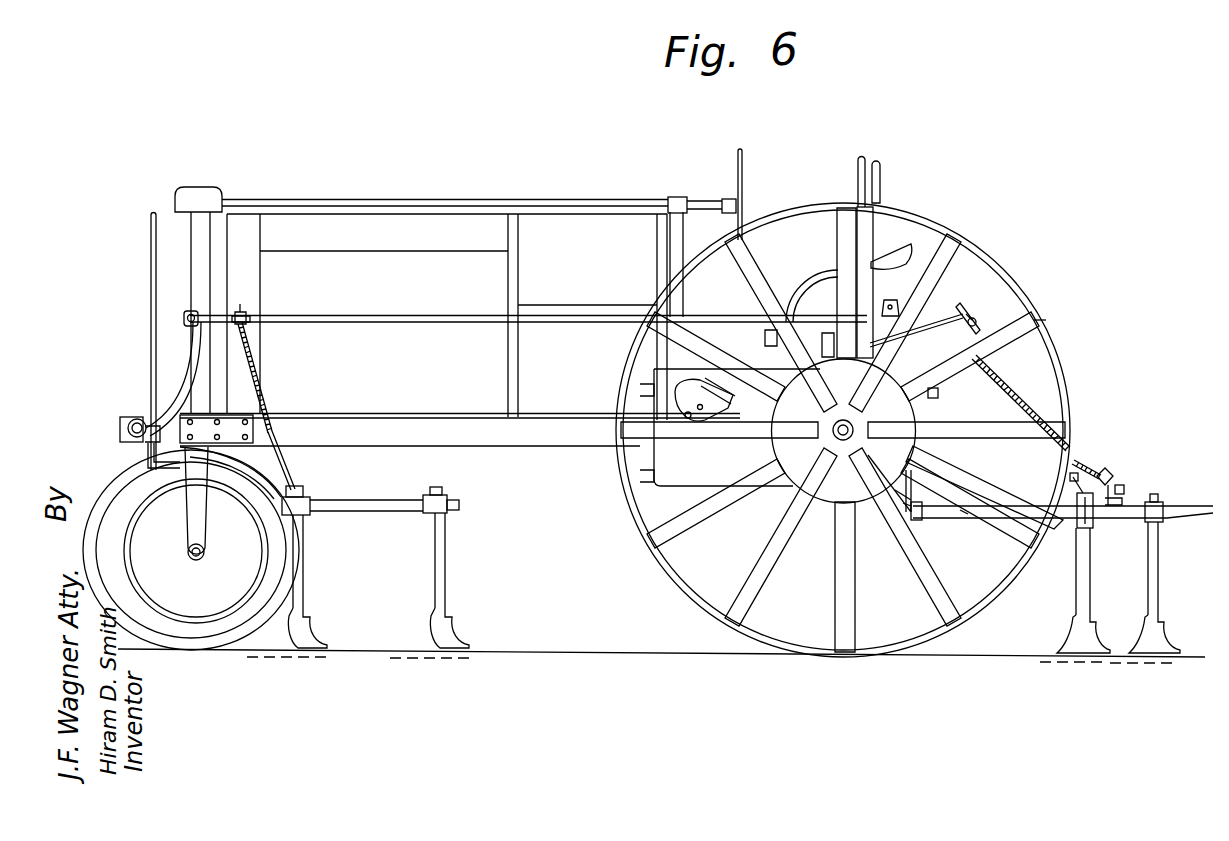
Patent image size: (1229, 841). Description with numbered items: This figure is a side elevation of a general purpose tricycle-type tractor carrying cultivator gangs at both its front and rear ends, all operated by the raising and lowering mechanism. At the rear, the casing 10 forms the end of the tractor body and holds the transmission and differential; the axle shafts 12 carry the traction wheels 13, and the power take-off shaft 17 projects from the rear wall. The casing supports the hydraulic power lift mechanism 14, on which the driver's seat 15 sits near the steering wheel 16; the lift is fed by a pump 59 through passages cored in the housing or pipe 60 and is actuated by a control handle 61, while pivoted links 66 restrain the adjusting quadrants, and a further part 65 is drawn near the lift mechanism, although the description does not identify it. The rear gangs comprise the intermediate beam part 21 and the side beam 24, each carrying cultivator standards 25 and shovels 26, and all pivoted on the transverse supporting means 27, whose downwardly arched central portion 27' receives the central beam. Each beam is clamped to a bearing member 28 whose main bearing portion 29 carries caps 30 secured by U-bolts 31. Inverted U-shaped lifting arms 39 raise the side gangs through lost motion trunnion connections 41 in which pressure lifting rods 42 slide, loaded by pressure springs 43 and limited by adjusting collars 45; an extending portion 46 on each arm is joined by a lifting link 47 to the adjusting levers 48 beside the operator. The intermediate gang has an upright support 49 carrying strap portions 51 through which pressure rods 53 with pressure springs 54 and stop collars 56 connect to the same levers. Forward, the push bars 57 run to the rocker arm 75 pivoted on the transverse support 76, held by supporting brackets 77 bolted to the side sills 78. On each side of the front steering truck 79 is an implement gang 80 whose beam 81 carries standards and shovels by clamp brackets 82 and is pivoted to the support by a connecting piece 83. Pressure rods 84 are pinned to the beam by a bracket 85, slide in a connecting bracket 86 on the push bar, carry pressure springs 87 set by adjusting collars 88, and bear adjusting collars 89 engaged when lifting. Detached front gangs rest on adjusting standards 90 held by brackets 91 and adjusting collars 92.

The casing 10 is at (660, 398).
The axle shafts 12 is at (837, 437).
The traction wheels 13 is at (655, 545).
The power lift mechanism 14 is at (790, 308).
The driver's seat 15 is at (902, 250).
The steering wheel 16 is at (737, 153).
The power take-off shaft 17 is at (984, 487).
The intermediate gang beam part 21 is at (965, 516).
The side gang beam 24 is at (1172, 516).
The cultivator standards 25 is at (304, 562).
The cultivator shovels 26 is at (442, 642).
The transverse supporting means 27 is at (895, 470).
The downwardly arched central portion 27' is at (884, 530).
The bearing members 28 is at (908, 522).
The main bearing portion 29 is at (925, 535).
The caps 30 is at (844, 431).
The U-bolts 31 is at (921, 514).
The lifting arms 39 is at (978, 322).
The lost motion trunnion connection 41 is at (978, 330).
The pressure lifting rods 42 is at (960, 309).
The pressure springs 43 is at (1006, 373).
The adjusting collars 45 is at (968, 318).
The extending portion 46 is at (939, 394).
The lifting link 47 is at (916, 328).
The adjusting levers 48 is at (857, 172).
The upright support 49 is at (1104, 516).
The strap portions 51 is at (1112, 474).
The pressure rods 53 is at (1124, 500).
The pressure springs 54 is at (1086, 462).
The stop collars 56 is at (1124, 488).
The push bars 57 is at (430, 323).
The pump 59 is at (692, 416).
The housing or pipe 60 is at (730, 397).
The control handle 61 is at (764, 342).
The latch 65 is at (900, 300).
The pivoted links 66 is at (841, 361).
The rocker arm 75 is at (182, 385).
The transverse support 76 is at (128, 428).
The supporting brackets 77 is at (130, 419).
The side sills 78 is at (624, 478).
The front steering truck 79 is at (206, 617).
The implement gangs 80 is at (378, 498).
The beam 81 is at (412, 510).
The clamp brackets 82 is at (300, 513).
The connecting piece 83 is at (189, 488).
The pressure rods 84 is at (292, 462).
The bracket 85 is at (305, 491).
The connecting bracket 86 is at (250, 318).
The pressure springs 87 is at (266, 388).
The adjusting collars 88 is at (256, 433).
The adjusting collars 89 is at (243, 311).
The adjusting standards 90 is at (150, 262).
The brackets 91 is at (142, 452).
The adjusting collars 92 is at (152, 472).